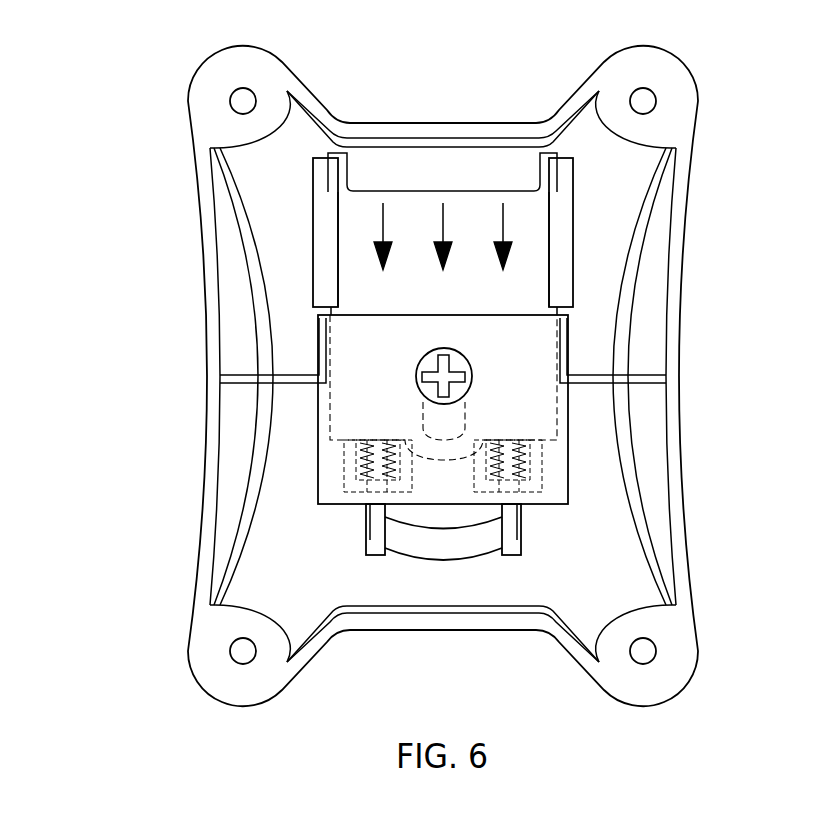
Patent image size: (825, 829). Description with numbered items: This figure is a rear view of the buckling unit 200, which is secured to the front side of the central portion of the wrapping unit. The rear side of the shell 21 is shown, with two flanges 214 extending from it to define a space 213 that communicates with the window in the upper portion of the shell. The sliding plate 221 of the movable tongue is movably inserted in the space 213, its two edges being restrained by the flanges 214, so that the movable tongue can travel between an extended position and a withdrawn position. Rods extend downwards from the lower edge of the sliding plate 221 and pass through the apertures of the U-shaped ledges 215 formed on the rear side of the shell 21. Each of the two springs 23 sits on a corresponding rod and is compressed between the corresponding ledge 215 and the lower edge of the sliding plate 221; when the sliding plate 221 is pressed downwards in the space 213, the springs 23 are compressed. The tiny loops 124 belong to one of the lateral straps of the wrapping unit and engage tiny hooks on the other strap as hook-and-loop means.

The buckling unit 200 is at (724, 62).
The shell 21 is at (677, 243).
The tiny loops 124 is at (323, 218).
The flanges 214 is at (560, 182).
The space 213 is at (474, 172).
The sliding plate 221 is at (523, 277).
The springs 23 is at (522, 455).
The ledges 215 is at (537, 494).